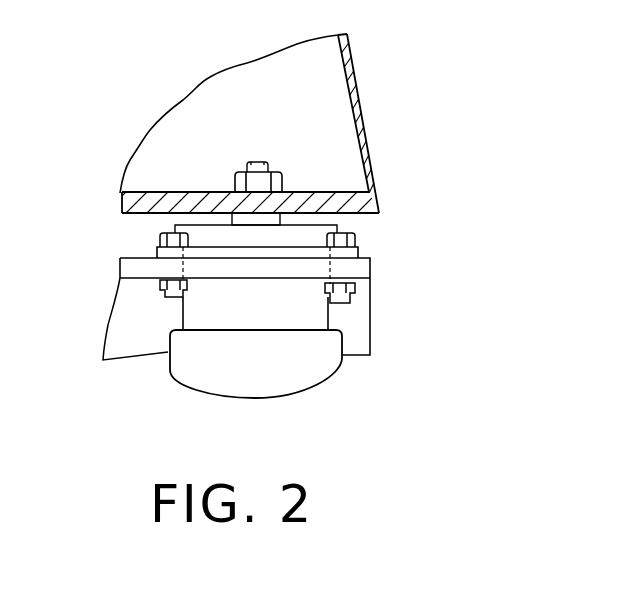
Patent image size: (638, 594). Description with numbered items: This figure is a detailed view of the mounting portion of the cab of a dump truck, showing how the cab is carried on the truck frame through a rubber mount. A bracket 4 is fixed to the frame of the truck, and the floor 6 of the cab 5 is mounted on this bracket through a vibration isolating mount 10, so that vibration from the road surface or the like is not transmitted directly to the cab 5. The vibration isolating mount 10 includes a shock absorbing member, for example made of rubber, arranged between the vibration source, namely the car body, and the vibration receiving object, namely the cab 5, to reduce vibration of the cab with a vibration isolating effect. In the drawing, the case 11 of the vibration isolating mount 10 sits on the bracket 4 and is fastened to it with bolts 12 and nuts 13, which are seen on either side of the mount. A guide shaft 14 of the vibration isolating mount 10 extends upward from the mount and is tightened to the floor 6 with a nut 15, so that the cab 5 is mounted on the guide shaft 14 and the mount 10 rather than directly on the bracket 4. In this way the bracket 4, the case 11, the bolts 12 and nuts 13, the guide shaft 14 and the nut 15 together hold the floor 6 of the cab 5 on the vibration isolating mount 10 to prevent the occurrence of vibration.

The bracket 4 is at (370, 347).
The cab 5 is at (328, 87).
The floor 6 is at (330, 190).
The vibration isolating mount 10 is at (168, 372).
The case 11 is at (167, 252).
The bolt 12 is at (157, 238).
The nut 13 is at (160, 288).
The guide shaft 14 is at (247, 217).
The nut 15 is at (238, 186).